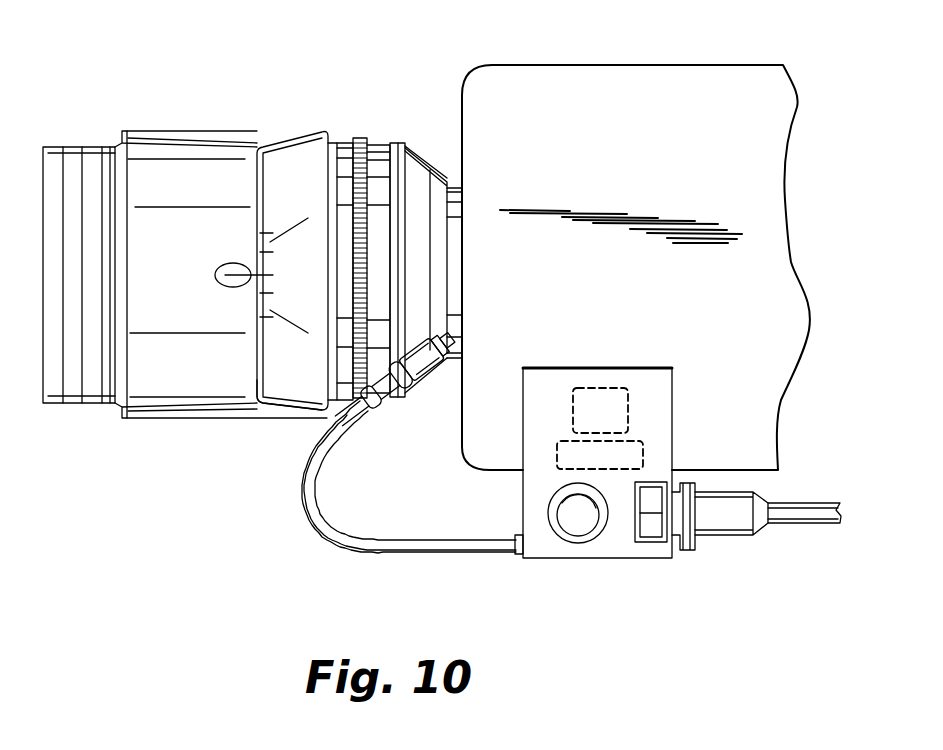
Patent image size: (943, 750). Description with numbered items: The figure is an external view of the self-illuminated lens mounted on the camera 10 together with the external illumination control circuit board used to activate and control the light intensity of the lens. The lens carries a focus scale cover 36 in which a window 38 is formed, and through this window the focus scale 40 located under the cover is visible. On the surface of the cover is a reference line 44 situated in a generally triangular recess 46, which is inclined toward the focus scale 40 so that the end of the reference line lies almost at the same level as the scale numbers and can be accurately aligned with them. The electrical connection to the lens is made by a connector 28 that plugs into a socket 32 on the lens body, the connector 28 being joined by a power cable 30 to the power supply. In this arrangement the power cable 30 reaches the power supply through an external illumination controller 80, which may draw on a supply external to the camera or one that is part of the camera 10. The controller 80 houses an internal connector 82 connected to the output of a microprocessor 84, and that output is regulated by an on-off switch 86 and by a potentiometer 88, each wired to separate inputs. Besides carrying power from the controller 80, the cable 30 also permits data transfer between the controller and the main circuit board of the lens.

The camera 10 is at (597, 65).
The connector 28 is at (390, 402).
The power cable 30 is at (311, 512).
The socket 32 is at (421, 381).
The focus scale cover 36 is at (152, 148).
The window 38 is at (278, 155).
The focus scale 40 is at (281, 388).
The reference line 44 is at (238, 272).
The recess 46 is at (226, 283).
The external illumination controller 80 is at (661, 368).
The internal connector 82 is at (598, 400).
The microprocessor 84 is at (560, 455).
The on-off switch 86 is at (650, 528).
The potentiometer 88 is at (578, 520).